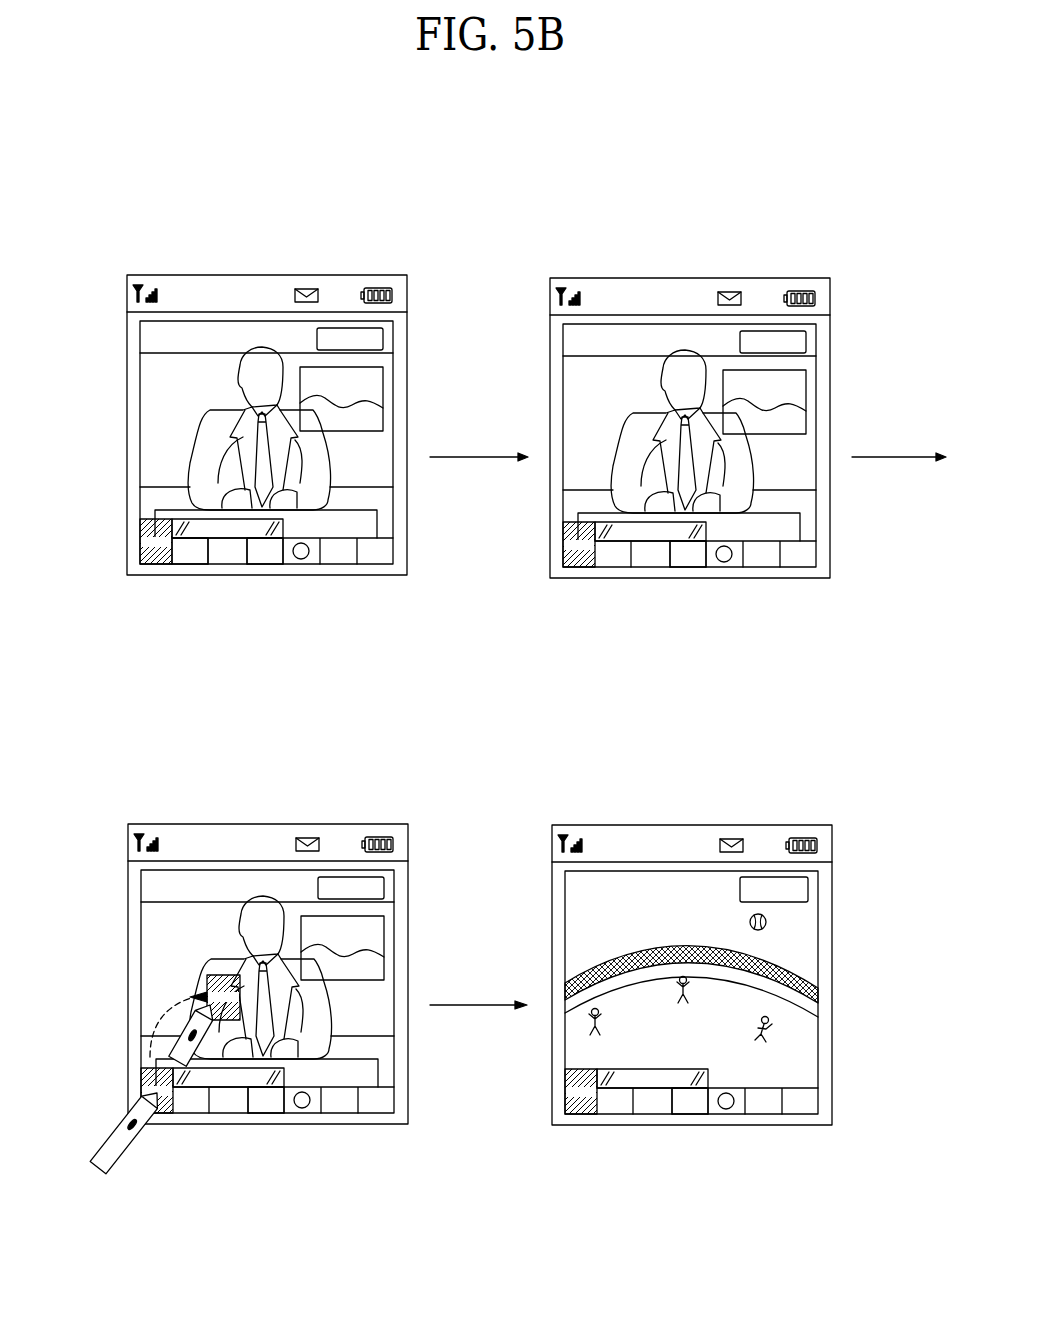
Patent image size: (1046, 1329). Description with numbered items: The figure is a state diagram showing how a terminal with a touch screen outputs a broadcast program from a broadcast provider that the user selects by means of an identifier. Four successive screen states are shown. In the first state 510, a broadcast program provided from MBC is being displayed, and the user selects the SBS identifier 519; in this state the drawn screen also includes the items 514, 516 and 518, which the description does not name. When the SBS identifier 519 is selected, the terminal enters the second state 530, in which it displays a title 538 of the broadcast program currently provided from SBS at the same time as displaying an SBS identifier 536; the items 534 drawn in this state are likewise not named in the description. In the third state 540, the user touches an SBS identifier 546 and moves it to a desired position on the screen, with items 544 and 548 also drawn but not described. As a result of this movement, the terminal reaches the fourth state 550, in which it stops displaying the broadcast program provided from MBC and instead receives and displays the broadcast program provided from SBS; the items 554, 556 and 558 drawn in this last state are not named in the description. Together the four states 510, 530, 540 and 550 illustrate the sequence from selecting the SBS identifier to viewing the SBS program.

The screen state 510 is at (358, 266).
The channel list 514 is at (347, 564).
The current channel indicator 516 is at (153, 564).
The channel item (FOX) 518 is at (275, 564).
The SBS identifier 519 is at (193, 564).
The screen state 530 is at (690, 435).
The channel list 534 is at (684, 593).
The SBS identifier 536 is at (574, 574).
The title 538 is at (691, 589).
The screen state 540 is at (235, 981).
The channel list 544 is at (228, 1089).
The SBS identifier 546 is at (151, 1074).
The channel item (FOX) 548 is at (269, 1135).
The screen state 550 is at (692, 983).
The channel list 554 is at (687, 1140).
The selected channel indicator 556 is at (577, 1123).
The channel item (FOX) 558 is at (692, 1136).